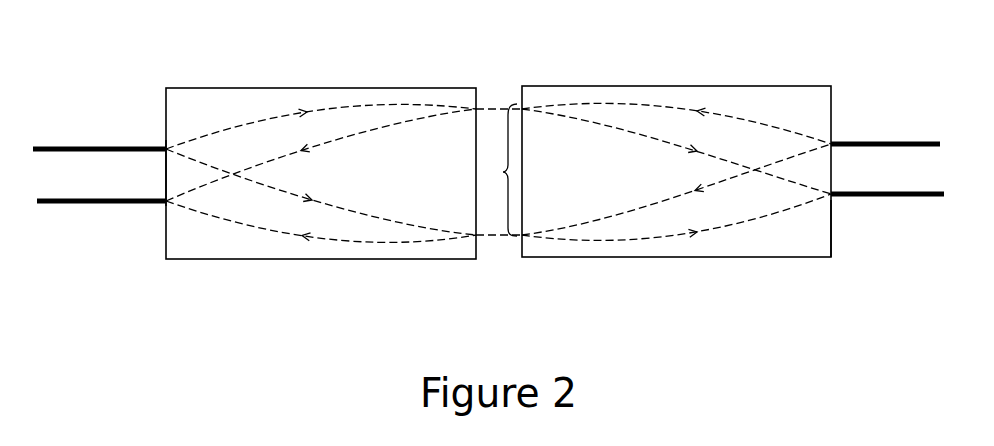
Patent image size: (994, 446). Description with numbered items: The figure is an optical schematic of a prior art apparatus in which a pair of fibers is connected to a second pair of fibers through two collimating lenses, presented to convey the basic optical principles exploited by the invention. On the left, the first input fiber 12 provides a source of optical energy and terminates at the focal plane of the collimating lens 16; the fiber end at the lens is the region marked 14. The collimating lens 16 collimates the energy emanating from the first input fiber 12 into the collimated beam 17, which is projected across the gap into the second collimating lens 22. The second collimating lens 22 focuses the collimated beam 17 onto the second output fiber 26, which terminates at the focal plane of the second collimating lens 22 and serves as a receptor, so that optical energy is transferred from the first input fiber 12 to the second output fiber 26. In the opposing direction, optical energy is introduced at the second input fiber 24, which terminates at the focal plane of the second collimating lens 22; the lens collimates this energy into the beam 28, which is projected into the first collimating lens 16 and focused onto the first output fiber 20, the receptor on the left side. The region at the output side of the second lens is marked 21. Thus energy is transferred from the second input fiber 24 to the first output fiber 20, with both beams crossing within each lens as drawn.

The first input fiber 12 is at (100, 137).
The first output fiber 20 is at (113, 190).
The input end of first coupler 14 is at (166, 140).
The collimating lens 16 is at (295, 77).
The second collimating lens 22 is at (698, 73).
The collimated beam 17 is at (500, 170).
The collimated beam 28 is at (499, 172).
The second input fiber 24 is at (920, 128).
The second output fiber 26 is at (925, 185).
The output end of second coupler 21 is at (838, 223).